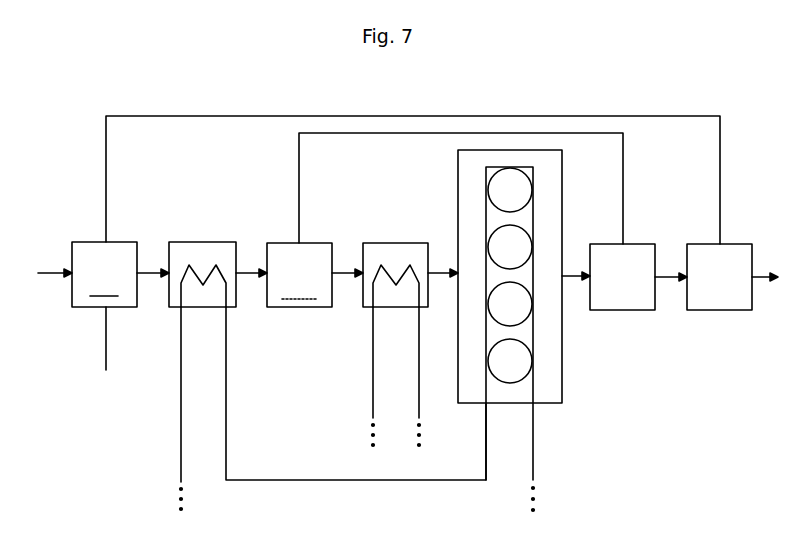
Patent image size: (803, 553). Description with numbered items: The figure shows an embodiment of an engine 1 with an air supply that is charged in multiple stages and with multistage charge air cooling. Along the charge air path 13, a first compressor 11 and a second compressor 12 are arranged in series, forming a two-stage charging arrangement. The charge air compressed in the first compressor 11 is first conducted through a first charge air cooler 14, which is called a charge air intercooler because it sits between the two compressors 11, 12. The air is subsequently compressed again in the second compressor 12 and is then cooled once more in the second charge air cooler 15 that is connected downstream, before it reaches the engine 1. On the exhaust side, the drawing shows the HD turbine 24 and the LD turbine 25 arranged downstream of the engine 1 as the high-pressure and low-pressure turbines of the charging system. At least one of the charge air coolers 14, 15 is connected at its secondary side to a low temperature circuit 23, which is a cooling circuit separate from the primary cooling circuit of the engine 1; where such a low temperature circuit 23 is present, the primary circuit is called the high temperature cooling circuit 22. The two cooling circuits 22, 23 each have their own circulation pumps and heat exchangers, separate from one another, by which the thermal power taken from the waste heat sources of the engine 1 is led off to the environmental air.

The engine 1 is at (563, 395).
The first compressor 11 is at (104, 306).
The second compressor 12 is at (299, 275).
The charge air path 13 is at (38, 273).
The first charge air cooler 14 is at (203, 252).
The second charge air cooler 15 is at (398, 254).
The cooling circuit 22 is at (178, 382).
The low temperature circuit 23 is at (372, 388).
The HD turbine 24 is at (622, 277).
The LD turbine 25 is at (719, 277).